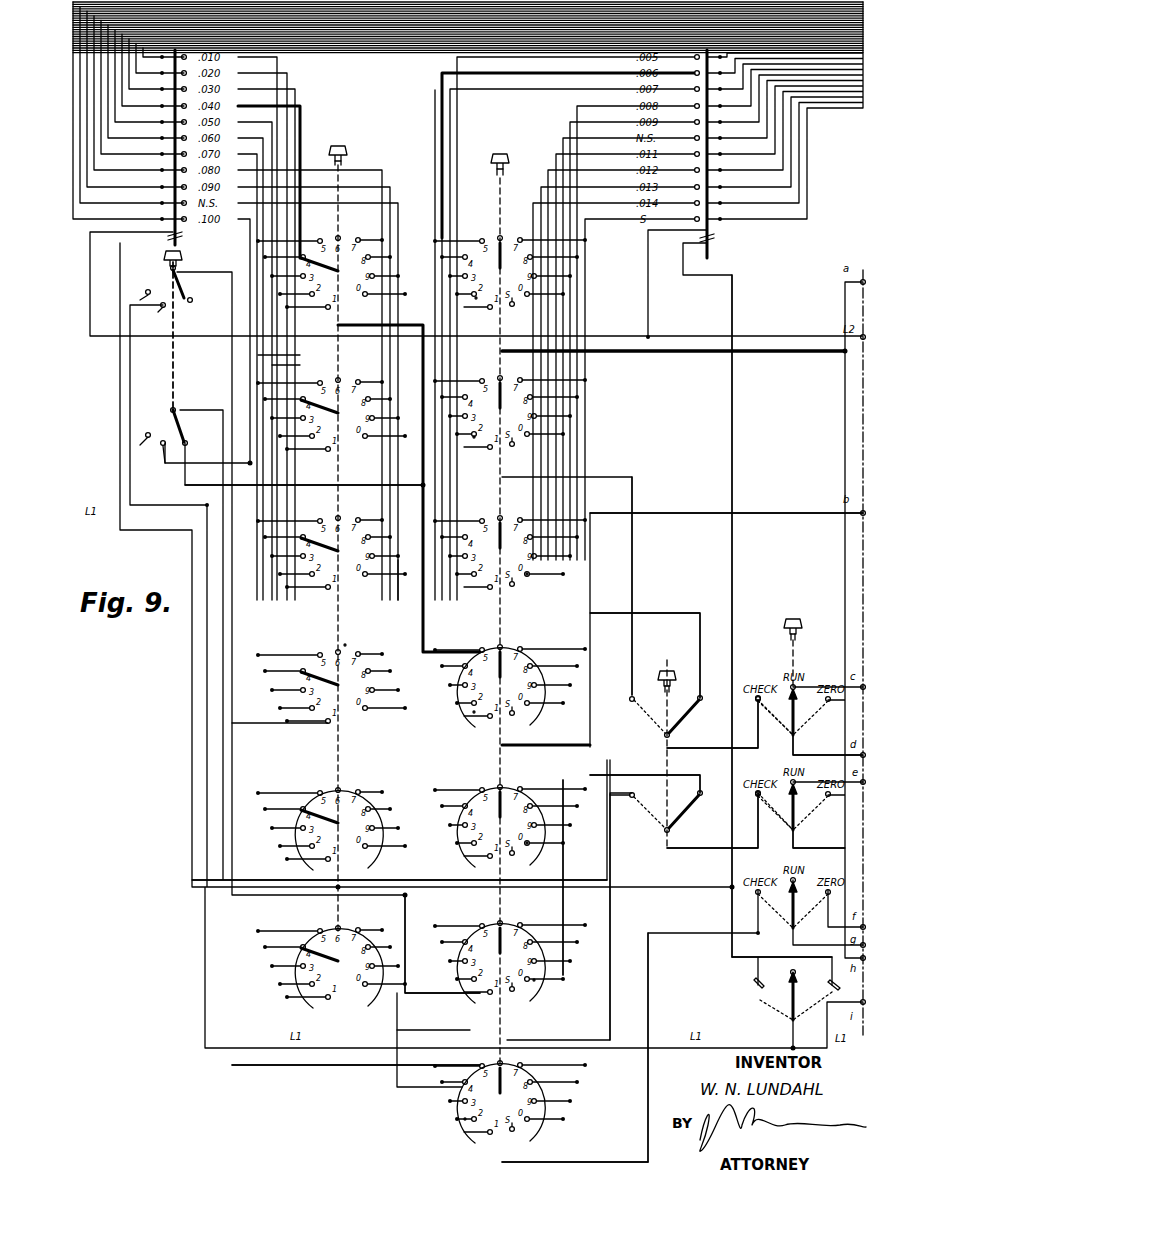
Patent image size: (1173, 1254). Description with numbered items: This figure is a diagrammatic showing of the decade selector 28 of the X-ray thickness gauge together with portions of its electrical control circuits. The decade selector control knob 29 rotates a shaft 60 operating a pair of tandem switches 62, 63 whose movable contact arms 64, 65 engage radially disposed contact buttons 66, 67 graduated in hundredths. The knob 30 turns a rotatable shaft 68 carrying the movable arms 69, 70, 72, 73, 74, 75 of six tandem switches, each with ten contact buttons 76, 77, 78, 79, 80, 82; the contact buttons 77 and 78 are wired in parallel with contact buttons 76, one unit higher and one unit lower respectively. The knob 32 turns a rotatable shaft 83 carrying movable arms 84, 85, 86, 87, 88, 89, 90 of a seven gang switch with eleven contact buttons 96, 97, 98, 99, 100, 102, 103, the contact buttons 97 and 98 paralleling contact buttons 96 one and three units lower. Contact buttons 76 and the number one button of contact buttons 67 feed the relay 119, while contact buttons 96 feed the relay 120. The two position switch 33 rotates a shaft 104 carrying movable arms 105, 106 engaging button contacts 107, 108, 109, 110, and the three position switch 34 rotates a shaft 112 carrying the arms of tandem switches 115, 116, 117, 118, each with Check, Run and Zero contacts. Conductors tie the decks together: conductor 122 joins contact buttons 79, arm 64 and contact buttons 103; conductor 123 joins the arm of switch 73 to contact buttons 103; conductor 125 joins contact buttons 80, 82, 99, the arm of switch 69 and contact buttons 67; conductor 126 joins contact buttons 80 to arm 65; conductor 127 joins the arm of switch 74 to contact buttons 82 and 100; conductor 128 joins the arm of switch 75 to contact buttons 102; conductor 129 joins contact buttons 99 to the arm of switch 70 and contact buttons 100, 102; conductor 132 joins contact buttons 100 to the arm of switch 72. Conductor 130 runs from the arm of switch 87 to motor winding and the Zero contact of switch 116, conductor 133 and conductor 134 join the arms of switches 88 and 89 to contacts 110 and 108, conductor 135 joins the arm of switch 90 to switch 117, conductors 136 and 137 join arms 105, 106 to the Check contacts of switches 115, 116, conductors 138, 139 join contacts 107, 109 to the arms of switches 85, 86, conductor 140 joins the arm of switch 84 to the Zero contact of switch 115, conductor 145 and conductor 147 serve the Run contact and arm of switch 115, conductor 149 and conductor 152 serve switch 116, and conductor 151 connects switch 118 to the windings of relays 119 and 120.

The decade selector 28 is at (172, 727).
The decade selector control knob 29 is at (182, 258).
The knob 30 is at (340, 140).
The decade selector control knob 32 is at (503, 150).
The two position switch 33 is at (659, 670).
The three position switch 34 is at (796, 616).
The shaft 60 is at (176, 355).
The tandem switch 62 is at (160, 285).
The tandem switch 63 is at (160, 425).
The movable contact arm 64 is at (186, 292).
The movable contact arm 65 is at (187, 432).
The contact buttons 66 is at (158, 315).
The contact buttons 67 is at (160, 455).
The rotatable shaft 68 is at (348, 156).
The movable arm 69 is at (331, 283).
The movable arm 70 is at (331, 426).
The movable arm 72 is at (320, 580).
The movable arm 73 is at (303, 686).
The movable arm 74 is at (300, 812).
The movable arm 75 is at (302, 952).
The contact buttons 76 is at (360, 247).
The contact buttons 77 is at (372, 400).
The contact buttons 78 is at (347, 562).
The contact buttons 79 is at (360, 660).
The contact buttons 80 is at (362, 793).
The contact buttons 82 is at (310, 985).
The rotatable shaft 83 is at (508, 164).
The movable arm 84 is at (518, 248).
The movable arm 85 is at (512, 385).
The movable arm 86 is at (485, 525).
The movable arm 87 is at (536, 662).
The movable arm 88 is at (480, 795).
The movable arm 89 is at (510, 930).
The movable arm 90 is at (520, 1085).
The contact buttons 96 is at (476, 300).
The contact buttons 97 is at (474, 440).
The contact buttons 98 is at (530, 572).
The contact buttons 99 is at (472, 715).
The contact buttons 100 is at (527, 842).
The contact buttons 102 is at (534, 982).
The contact buttons 103 is at (465, 1120).
The shaft 104 is at (670, 684).
The movable arm 105 is at (660, 728).
The movable arm 106 is at (690, 790).
The button contact 107 is at (630, 705).
The button contact 108 is at (633, 802).
The button contact 109 is at (700, 705).
The button contact 110 is at (695, 805).
The shaft 112 is at (788, 632).
The tandem switch 115 is at (797, 718).
The tandem switch 116 is at (797, 818).
The tandem switch 117 is at (805, 912).
The tandem switch 118 is at (780, 1012).
The relay 119 is at (182, 238).
The relay 120 is at (714, 240).
The conductor 122 is at (205, 550).
The conductor 123 is at (338, 762).
The conductor 125 is at (185, 488).
The conductor 126 is at (205, 528).
The conductor 127 is at (338, 890).
The conductor 128 is at (430, 1030).
The conductor 129 is at (398, 550).
The conductor 130 is at (703, 512).
The conductor 132 is at (395, 622).
The conductor 133 is at (575, 895).
The conductor 134 is at (635, 975).
The conductor 135 is at (648, 1080).
The conductor 136 is at (710, 758).
The conductor 137 is at (668, 850).
The conductor 138 is at (633, 585).
The conductor 139 is at (640, 615).
The conductor 140 is at (665, 352).
The conductor 145 is at (800, 676).
The conductor 147 is at (815, 753).
The conductor 149 is at (794, 797).
The conductor 151 is at (733, 390).
The conductor 152 is at (810, 848).